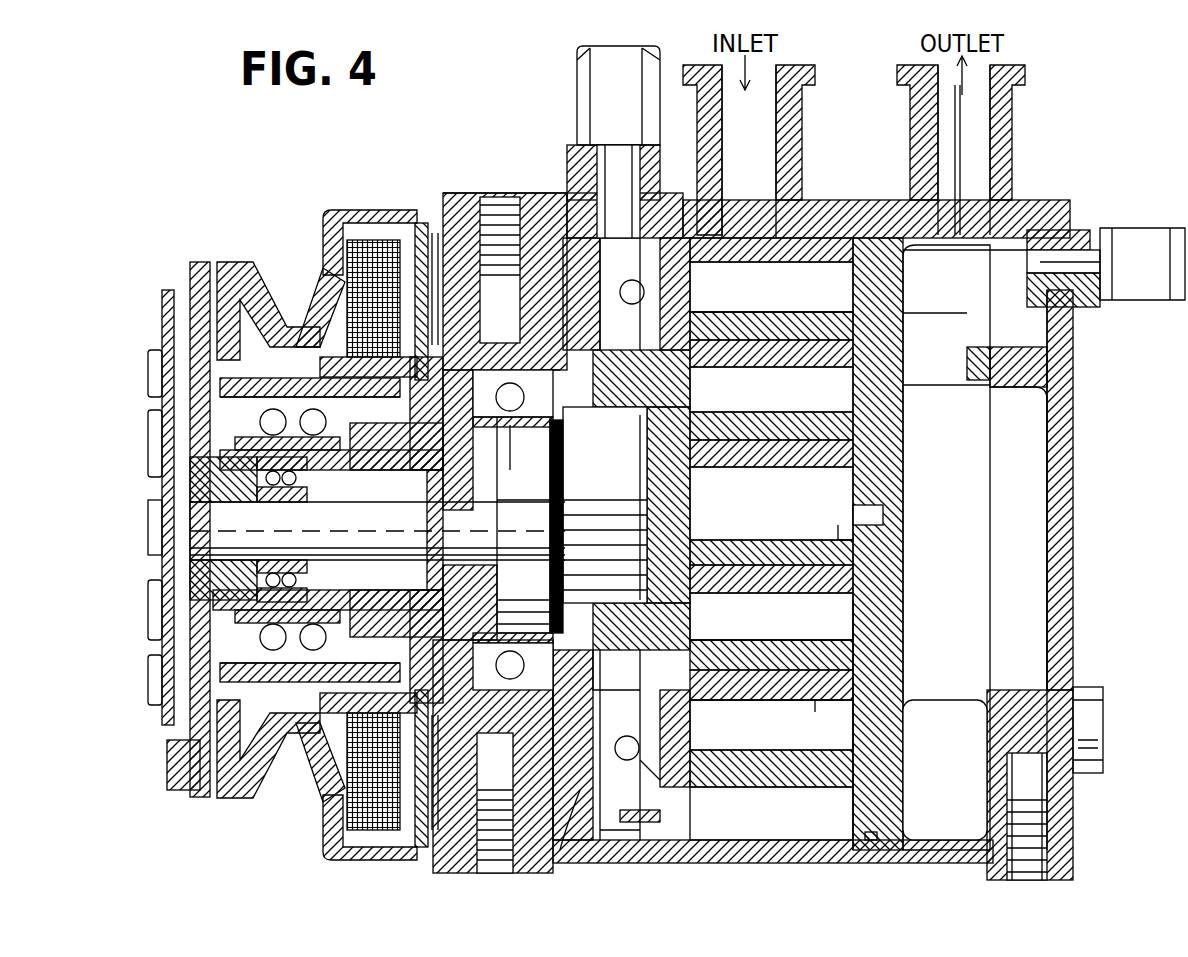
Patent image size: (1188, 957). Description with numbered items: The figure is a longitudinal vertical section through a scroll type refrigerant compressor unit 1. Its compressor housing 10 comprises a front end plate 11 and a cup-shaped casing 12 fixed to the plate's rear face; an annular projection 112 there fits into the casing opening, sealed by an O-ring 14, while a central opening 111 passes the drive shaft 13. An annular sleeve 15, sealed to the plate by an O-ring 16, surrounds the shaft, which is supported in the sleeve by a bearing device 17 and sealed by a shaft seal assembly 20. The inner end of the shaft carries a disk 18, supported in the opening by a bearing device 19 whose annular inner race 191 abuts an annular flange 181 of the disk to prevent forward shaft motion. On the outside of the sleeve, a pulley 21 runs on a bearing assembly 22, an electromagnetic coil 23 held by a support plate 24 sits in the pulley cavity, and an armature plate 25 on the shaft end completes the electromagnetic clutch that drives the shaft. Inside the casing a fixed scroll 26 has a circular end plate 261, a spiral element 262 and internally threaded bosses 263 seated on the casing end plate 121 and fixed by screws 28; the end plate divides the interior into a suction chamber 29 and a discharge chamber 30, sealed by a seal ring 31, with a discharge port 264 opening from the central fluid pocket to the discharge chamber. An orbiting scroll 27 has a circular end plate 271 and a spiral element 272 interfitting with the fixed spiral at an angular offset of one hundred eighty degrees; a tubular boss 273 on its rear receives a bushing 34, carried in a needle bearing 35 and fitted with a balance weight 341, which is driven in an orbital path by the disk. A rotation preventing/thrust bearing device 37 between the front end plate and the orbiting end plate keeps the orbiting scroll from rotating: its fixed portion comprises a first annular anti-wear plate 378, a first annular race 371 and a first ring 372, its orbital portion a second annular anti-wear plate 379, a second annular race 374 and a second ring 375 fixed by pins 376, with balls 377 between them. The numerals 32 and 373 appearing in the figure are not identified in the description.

The compressor unit 1 is at (755, 863).
The compressor housing 10 is at (455, 193).
The front end plate 11 is at (447, 873).
The opening 111 is at (545, 378).
The annular projection 112 is at (585, 840).
The cup-shaped casing 12 is at (1062, 494).
The end plate 121 is at (1062, 562).
The drive shaft 13 is at (377, 531).
The O-ring 14 is at (580, 193).
The annular sleeve 15 is at (305, 762).
The O-ring 16 is at (435, 845).
The bearing device 17 is at (190, 590).
The disk 18 is at (530, 520).
The annular flange 181 is at (555, 440).
The bearing device 19 is at (478, 440).
The annular inner race 191 is at (522, 447).
The shaft seal assembly 20 is at (335, 492).
The pulley 21 is at (335, 212).
The bearing assembly 22 is at (225, 640).
The electromagnetic coil 23 is at (370, 240).
The support plate 24 is at (434, 233).
The armature plate 25 is at (193, 795).
The fixed scroll 26 is at (902, 422).
The circular end plate 261 is at (885, 645).
The spiral element 262 is at (818, 555).
The internally threaded bosses 263 is at (922, 755).
The discharge port 264 is at (885, 520).
The orbiting scroll 27 is at (695, 495).
The circular end plate 271 is at (690, 612).
The spiral element 272 is at (771, 725).
The tubular boss 273 is at (690, 386).
The screws 28 is at (1086, 773).
The suction chamber 29 is at (771, 813).
The discharge chamber 30 is at (946, 617).
The seal ring 31 is at (795, 138).
The outlet port 32 is at (1005, 138).
The bushing 34 is at (635, 535).
The balance weight 341 is at (612, 677).
The needle bearing 35 is at (640, 420).
The rotation preventing/thrust bearing device 37 is at (650, 800).
The first annular race 371 is at (600, 770).
The first ring 372 is at (640, 822).
The valve body 373 is at (608, 835).
The second annular race 374 is at (690, 700).
The second ring 375 is at (645, 798).
The pins 376 is at (700, 318).
The balls 377 is at (690, 282).
The first annular anti-wear plate 378 is at (495, 873).
The second annular anti-wear plate 379 is at (785, 700).